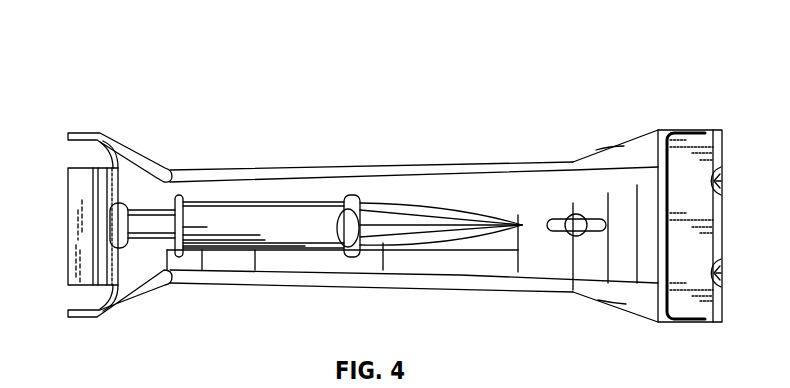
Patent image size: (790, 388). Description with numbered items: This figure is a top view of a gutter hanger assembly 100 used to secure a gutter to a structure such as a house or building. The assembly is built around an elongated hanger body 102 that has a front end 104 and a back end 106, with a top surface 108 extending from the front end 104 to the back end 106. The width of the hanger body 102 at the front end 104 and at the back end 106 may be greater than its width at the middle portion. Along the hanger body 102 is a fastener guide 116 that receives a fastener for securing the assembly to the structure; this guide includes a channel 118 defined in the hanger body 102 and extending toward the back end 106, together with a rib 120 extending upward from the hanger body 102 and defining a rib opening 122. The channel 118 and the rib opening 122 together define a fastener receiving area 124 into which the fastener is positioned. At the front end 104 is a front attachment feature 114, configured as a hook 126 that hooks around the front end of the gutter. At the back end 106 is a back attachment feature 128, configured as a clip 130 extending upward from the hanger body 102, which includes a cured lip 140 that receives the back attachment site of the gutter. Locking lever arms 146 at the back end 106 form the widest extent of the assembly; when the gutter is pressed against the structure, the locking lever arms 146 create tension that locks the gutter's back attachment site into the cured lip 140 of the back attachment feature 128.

The gutter hanger assembly 100 is at (174, 52).
The hanger body 102 is at (445, 163).
The front end 104 is at (660, 130).
The back end 106 is at (111, 190).
The top surface 108 is at (488, 190).
The front attachment feature 114 is at (702, 140).
The fastener guide 116 is at (295, 146).
The channel 118 is at (372, 218).
The rib 120 is at (220, 215).
The rib opening 122 is at (343, 226).
The fastener receiving area 124 is at (370, 245).
The hook 126 is at (702, 207).
The back attachment feature 128 is at (78, 205).
The clip 130 is at (78, 263).
The cured lip 140 is at (82, 168).
The locking lever arms 146 is at (83, 134).